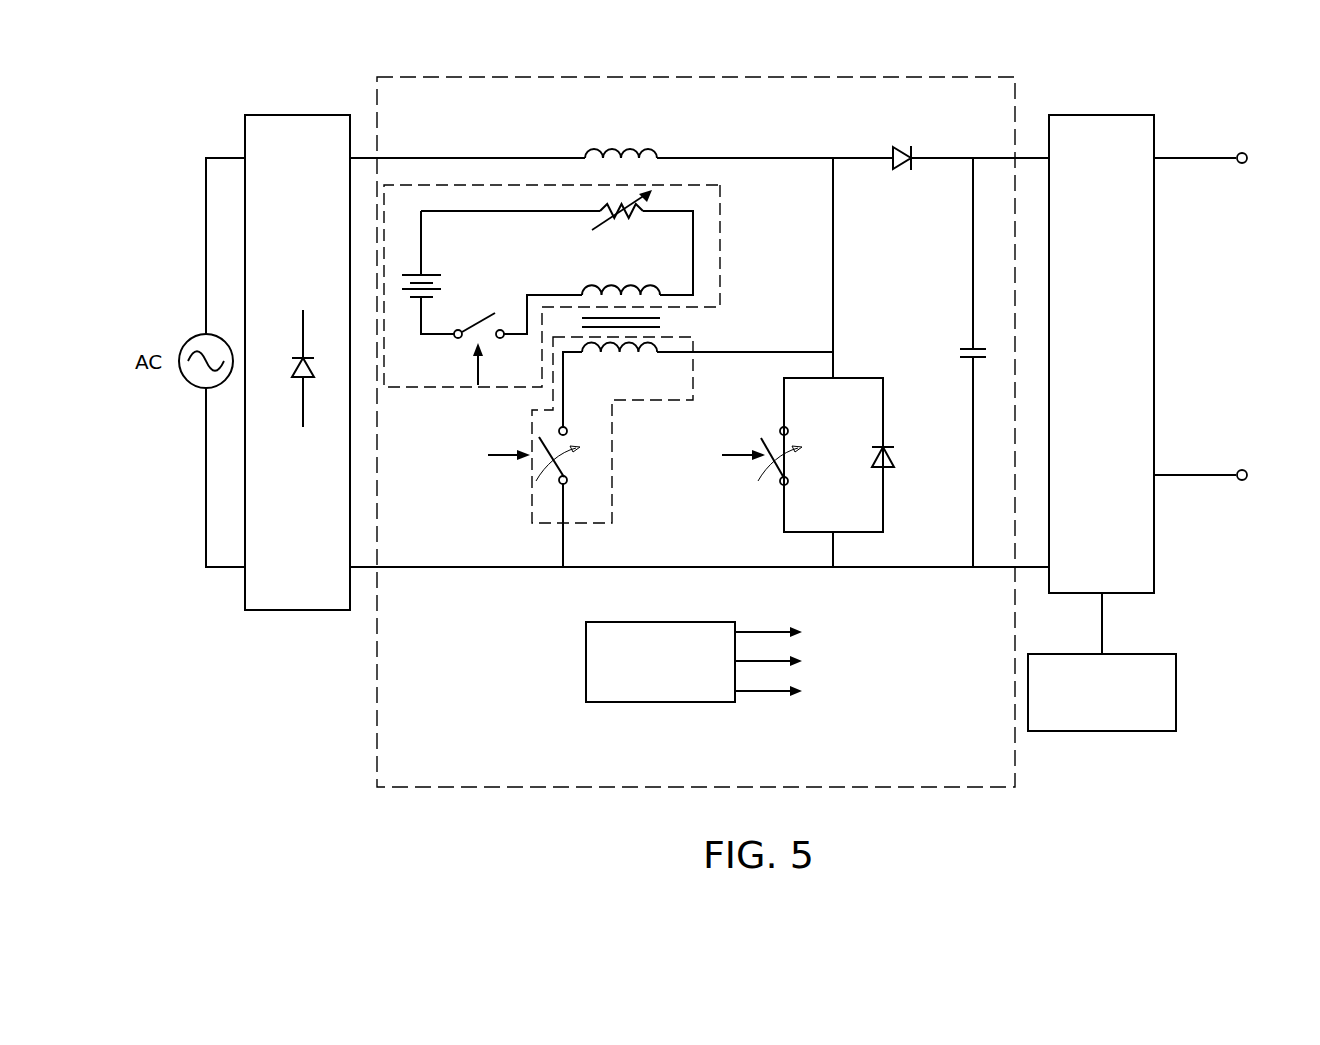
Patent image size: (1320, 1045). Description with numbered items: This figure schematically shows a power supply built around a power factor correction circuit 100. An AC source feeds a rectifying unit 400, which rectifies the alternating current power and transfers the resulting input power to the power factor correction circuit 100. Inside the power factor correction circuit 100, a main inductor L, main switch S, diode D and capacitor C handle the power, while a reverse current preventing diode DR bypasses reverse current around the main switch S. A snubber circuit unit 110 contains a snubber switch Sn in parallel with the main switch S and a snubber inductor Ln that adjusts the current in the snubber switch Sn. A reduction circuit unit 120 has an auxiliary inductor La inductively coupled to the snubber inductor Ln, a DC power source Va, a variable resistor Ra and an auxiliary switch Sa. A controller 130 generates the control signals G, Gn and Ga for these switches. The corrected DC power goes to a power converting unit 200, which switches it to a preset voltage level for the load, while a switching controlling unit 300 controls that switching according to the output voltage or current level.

The power factor correction circuit 100 is at (377, 708).
The snubber circuit unit 110 is at (693, 337).
The reduction circuit unit 120 is at (720, 220).
The controller 130 is at (658, 702).
The power converting unit 200 is at (1093, 130).
The switching controlling unit 300 is at (1176, 688).
The rectifying unit 400 is at (293, 130).